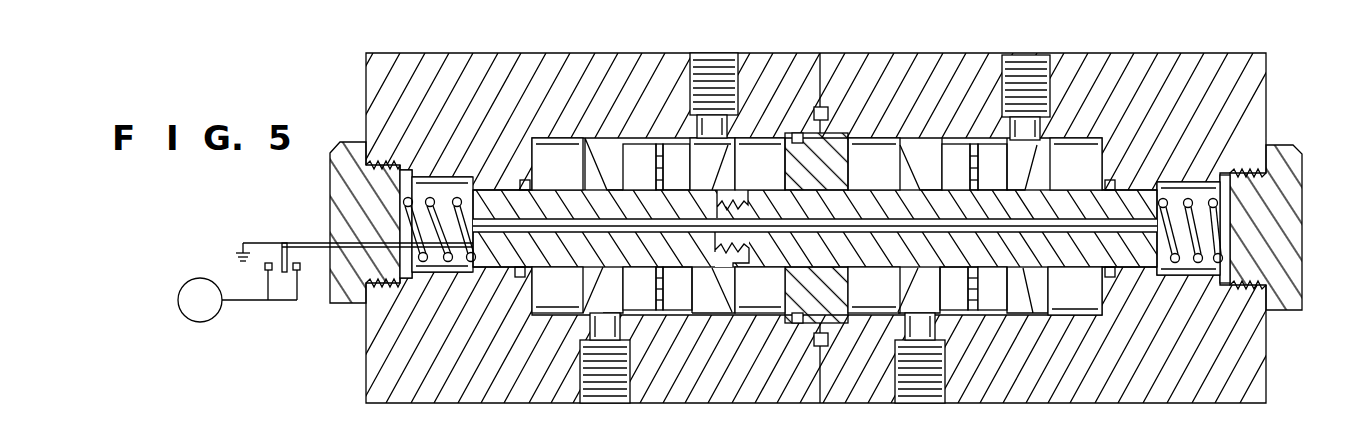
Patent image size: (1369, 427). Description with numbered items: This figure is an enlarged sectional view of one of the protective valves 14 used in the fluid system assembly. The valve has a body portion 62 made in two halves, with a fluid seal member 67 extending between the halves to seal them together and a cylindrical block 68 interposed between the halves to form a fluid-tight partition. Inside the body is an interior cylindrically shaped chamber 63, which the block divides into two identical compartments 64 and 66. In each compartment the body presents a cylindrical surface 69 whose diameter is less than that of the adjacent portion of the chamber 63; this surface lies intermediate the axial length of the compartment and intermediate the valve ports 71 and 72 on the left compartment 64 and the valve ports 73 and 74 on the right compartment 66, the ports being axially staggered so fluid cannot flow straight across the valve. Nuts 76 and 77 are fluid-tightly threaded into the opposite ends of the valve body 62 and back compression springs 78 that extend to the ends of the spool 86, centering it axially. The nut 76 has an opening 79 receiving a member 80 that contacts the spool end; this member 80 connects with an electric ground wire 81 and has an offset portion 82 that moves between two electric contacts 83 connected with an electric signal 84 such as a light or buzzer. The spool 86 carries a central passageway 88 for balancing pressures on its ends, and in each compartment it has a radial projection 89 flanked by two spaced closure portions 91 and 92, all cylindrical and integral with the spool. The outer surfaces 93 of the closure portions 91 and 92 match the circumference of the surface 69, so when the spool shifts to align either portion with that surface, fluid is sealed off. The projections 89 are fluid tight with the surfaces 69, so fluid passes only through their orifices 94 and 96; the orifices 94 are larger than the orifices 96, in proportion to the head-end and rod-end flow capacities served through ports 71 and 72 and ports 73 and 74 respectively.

The protective valve 14 is at (1178, 80).
The valve body 62 is at (780, 85).
The interior cylindrically shaped chamber 63 is at (1063, 143).
The left compartment 64 is at (610, 157).
The right compartment 66 is at (1020, 157).
The fluid seal member 67 is at (830, 108).
The cylindrical block 68 is at (787, 177).
The cylindrical surface 69 is at (646, 150).
The valve port 71 is at (737, 98).
The valve port 72 is at (595, 385).
The valve port 73 is at (1043, 85).
The valve port 74 is at (943, 370).
The nut 76 is at (353, 293).
The nut 77 is at (1288, 290).
The compression spring 78 is at (433, 198).
The opening 79 is at (357, 292).
The member 80 is at (317, 242).
The electric ground wire 81 is at (258, 242).
The offset portion 82 is at (282, 250).
The electric contacts 83 is at (297, 272).
The electric signal 84 is at (197, 313).
The spool 86 is at (557, 207).
The central passageway 88 is at (877, 223).
The radial projection 89 is at (660, 146).
The closure portion 91 is at (590, 283).
The closure portion 92 is at (730, 283).
The outer surface 93 is at (587, 150).
The orifice 94 is at (657, 290).
The orifice 96 is at (970, 177).